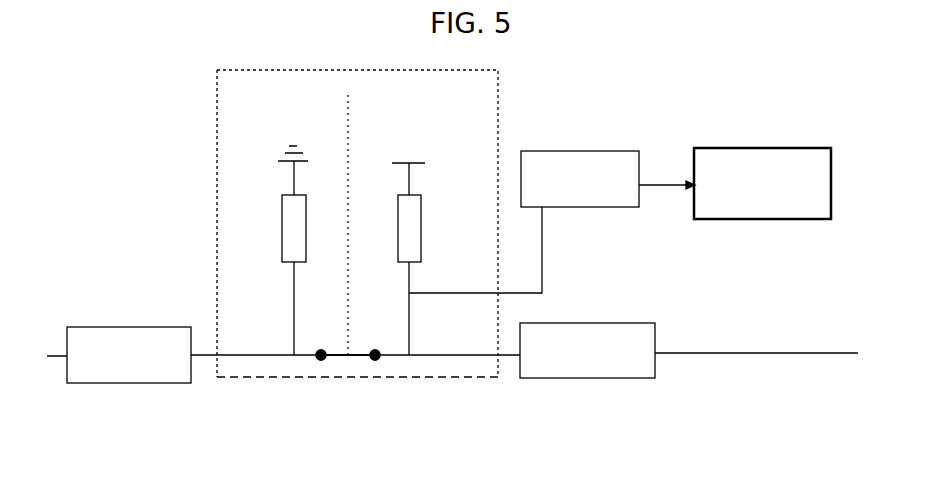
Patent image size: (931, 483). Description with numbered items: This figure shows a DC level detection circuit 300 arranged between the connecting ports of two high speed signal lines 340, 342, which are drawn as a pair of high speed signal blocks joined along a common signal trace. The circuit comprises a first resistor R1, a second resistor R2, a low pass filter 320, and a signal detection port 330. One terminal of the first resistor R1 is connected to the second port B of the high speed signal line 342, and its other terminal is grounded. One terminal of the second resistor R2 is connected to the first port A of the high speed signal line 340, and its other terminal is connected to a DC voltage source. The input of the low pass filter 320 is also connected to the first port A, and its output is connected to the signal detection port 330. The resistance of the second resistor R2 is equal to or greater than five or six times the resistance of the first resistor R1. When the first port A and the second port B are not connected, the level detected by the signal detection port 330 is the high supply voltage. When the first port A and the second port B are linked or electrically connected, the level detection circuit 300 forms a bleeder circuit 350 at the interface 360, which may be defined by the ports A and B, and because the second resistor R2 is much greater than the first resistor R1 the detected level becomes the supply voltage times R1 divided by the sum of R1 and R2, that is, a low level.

The DC level detection circuit 300 is at (598, 80).
The low pass filter 320 is at (577, 207).
The signal detection port 330 is at (752, 219).
The high speed signal line 340 is at (603, 378).
The high speed signal line 342 is at (142, 383).
The bleeder circuit 350 is at (328, 223).
The interface 360 is at (348, 364).
The first port A is at (380, 363).
The second port B is at (318, 362).
The first resistor R1 is at (271, 250).
The second resistor R2 is at (427, 239).